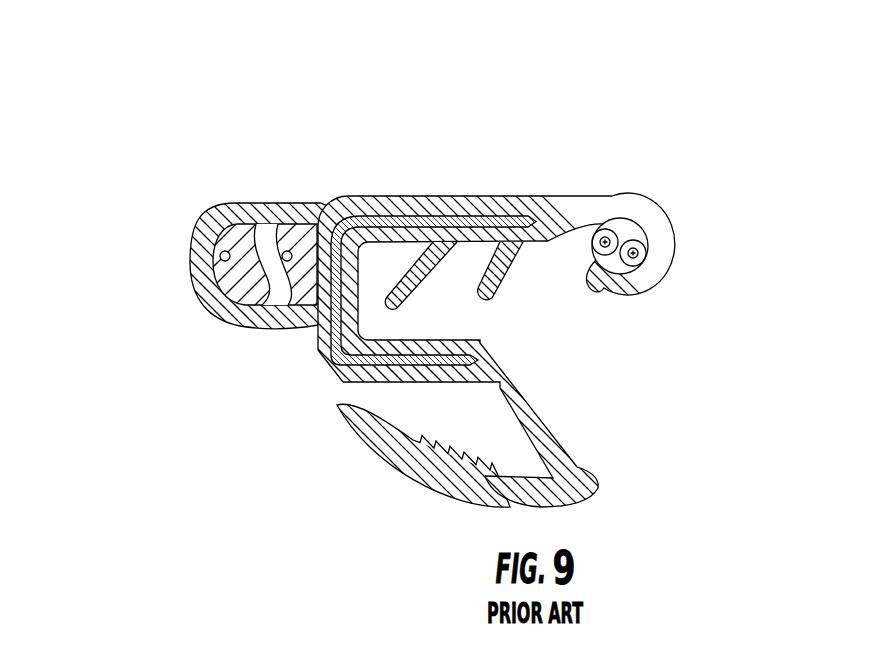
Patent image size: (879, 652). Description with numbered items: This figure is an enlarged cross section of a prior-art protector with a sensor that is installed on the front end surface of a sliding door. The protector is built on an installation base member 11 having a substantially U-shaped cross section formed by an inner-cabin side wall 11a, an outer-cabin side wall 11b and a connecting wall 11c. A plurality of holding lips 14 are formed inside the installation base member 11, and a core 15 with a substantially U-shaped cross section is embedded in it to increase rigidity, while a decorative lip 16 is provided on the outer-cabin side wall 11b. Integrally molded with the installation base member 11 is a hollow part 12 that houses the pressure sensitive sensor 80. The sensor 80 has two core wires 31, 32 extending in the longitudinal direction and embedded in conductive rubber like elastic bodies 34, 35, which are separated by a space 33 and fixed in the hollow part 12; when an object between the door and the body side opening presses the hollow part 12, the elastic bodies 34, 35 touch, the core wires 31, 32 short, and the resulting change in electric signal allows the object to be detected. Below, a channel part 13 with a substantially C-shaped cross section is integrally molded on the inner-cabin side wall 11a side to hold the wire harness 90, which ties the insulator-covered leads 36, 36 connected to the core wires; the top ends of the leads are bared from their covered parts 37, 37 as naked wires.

The installation base member 11 is at (485, 197).
The inner-cabin side wall 11a is at (418, 197).
The outer-cabin side wall 11b is at (413, 383).
The connecting wall 11c is at (318, 352).
The hollow part 12 is at (289, 251).
The channel part 13 is at (657, 203).
The holding lips 14 is at (492, 289).
The core 15 is at (340, 380).
The decorative lip 16 is at (424, 482).
The core wire 31 is at (223, 251).
The core wire 32 is at (307, 231).
The space 33 is at (260, 327).
The rubber like elastic body 34 is at (208, 312).
The rubber like elastic body 35 is at (318, 203).
The lead 36 is at (644, 246).
The covered part 37 is at (594, 268).
The pressure sensitive sensor 80 is at (240, 296).
The wire harness 90 is at (623, 221).